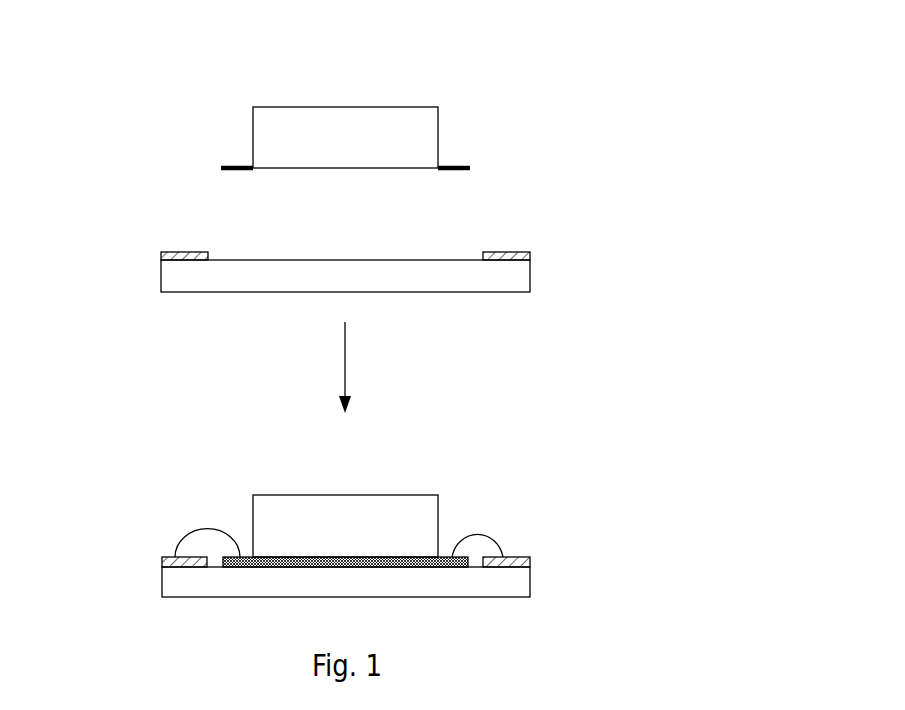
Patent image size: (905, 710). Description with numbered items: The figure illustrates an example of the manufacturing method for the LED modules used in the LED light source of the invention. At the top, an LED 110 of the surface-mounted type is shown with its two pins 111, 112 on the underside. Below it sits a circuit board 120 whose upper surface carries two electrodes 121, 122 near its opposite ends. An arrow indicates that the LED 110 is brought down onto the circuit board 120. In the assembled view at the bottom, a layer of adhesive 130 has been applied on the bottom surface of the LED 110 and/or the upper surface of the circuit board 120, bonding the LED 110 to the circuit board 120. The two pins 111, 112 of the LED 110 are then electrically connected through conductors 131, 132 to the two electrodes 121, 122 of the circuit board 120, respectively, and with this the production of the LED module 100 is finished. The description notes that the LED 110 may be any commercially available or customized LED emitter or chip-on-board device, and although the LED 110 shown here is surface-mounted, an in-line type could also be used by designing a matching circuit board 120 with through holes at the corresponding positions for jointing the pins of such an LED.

The LED module 100 is at (195, 450).
The LED 110 is at (408, 81).
The pin 111 is at (241, 166).
The pin 112 is at (458, 167).
The circuit board 120 is at (427, 259).
The electrode 121 is at (178, 253).
The electrode 122 is at (517, 252).
The adhesive 130 is at (365, 556).
The conductor 131 is at (208, 528).
The conductor 132 is at (488, 528).